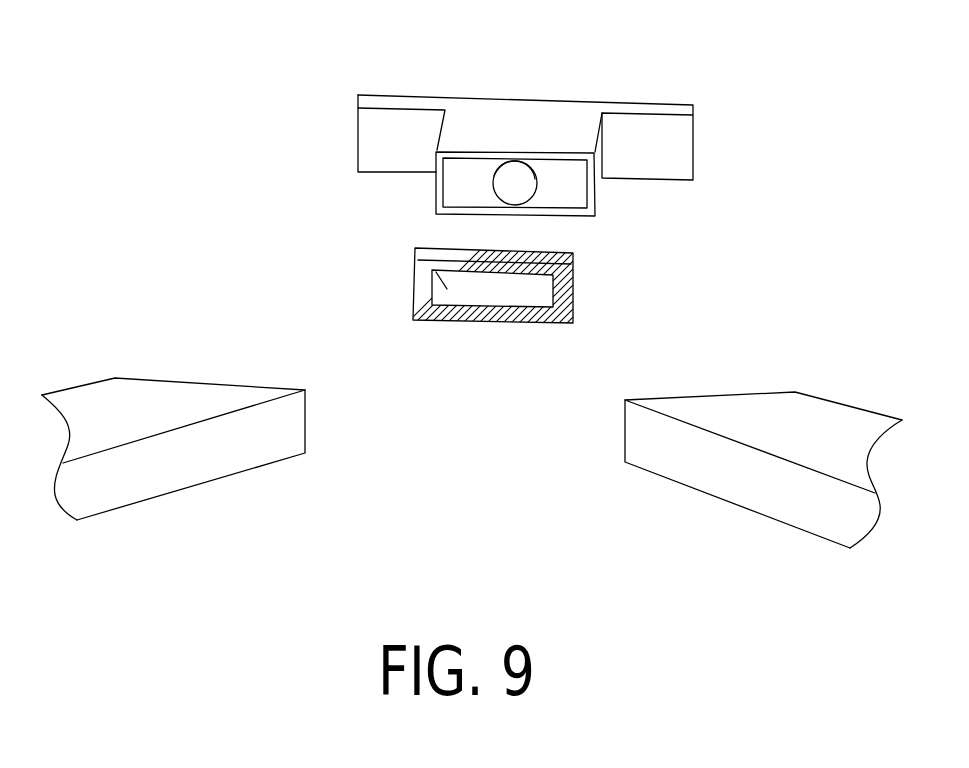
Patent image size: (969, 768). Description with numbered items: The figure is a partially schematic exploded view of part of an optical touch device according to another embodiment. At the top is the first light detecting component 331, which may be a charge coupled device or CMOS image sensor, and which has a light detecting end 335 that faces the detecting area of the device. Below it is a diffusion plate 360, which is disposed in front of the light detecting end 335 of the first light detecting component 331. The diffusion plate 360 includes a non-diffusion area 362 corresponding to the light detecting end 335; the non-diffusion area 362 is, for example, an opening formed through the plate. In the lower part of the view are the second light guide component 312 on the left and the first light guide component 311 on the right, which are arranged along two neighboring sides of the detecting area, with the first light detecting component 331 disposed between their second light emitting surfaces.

The first light detecting component 331 is at (575, 113).
The light detecting end 335 is at (496, 193).
The diffusion plate 360 is at (569, 291).
The non-diffusion area 362 is at (436, 279).
The second light guide component 312 is at (100, 393).
The first light guide component 311 is at (835, 418).